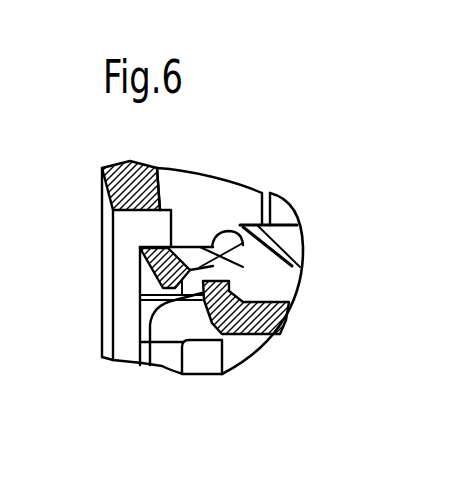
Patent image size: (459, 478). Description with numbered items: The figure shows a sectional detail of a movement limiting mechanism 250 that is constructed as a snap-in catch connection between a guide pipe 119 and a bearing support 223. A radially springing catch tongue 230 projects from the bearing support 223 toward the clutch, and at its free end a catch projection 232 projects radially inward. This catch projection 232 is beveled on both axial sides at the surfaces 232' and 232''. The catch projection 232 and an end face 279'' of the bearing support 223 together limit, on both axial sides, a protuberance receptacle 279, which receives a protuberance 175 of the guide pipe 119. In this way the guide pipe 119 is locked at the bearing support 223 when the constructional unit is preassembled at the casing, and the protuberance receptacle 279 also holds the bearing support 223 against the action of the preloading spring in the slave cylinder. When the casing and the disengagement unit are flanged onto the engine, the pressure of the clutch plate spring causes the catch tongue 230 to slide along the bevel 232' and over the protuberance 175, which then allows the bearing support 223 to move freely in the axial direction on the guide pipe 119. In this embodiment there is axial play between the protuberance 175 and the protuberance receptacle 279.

The guide pipe 119 is at (290, 317).
The protuberance 175 is at (222, 376).
The bearing support 223 is at (302, 235).
The catch tongue 230 is at (192, 247).
The catch projection 232 is at (117, 295).
The bevel surface 232' is at (112, 310).
The bevel surface 232'' is at (114, 344).
The movement limiting mechanism 250 is at (273, 357).
The protuberance receptacle 279 is at (316, 178).
The end face of the bearing support 279'' is at (322, 252).